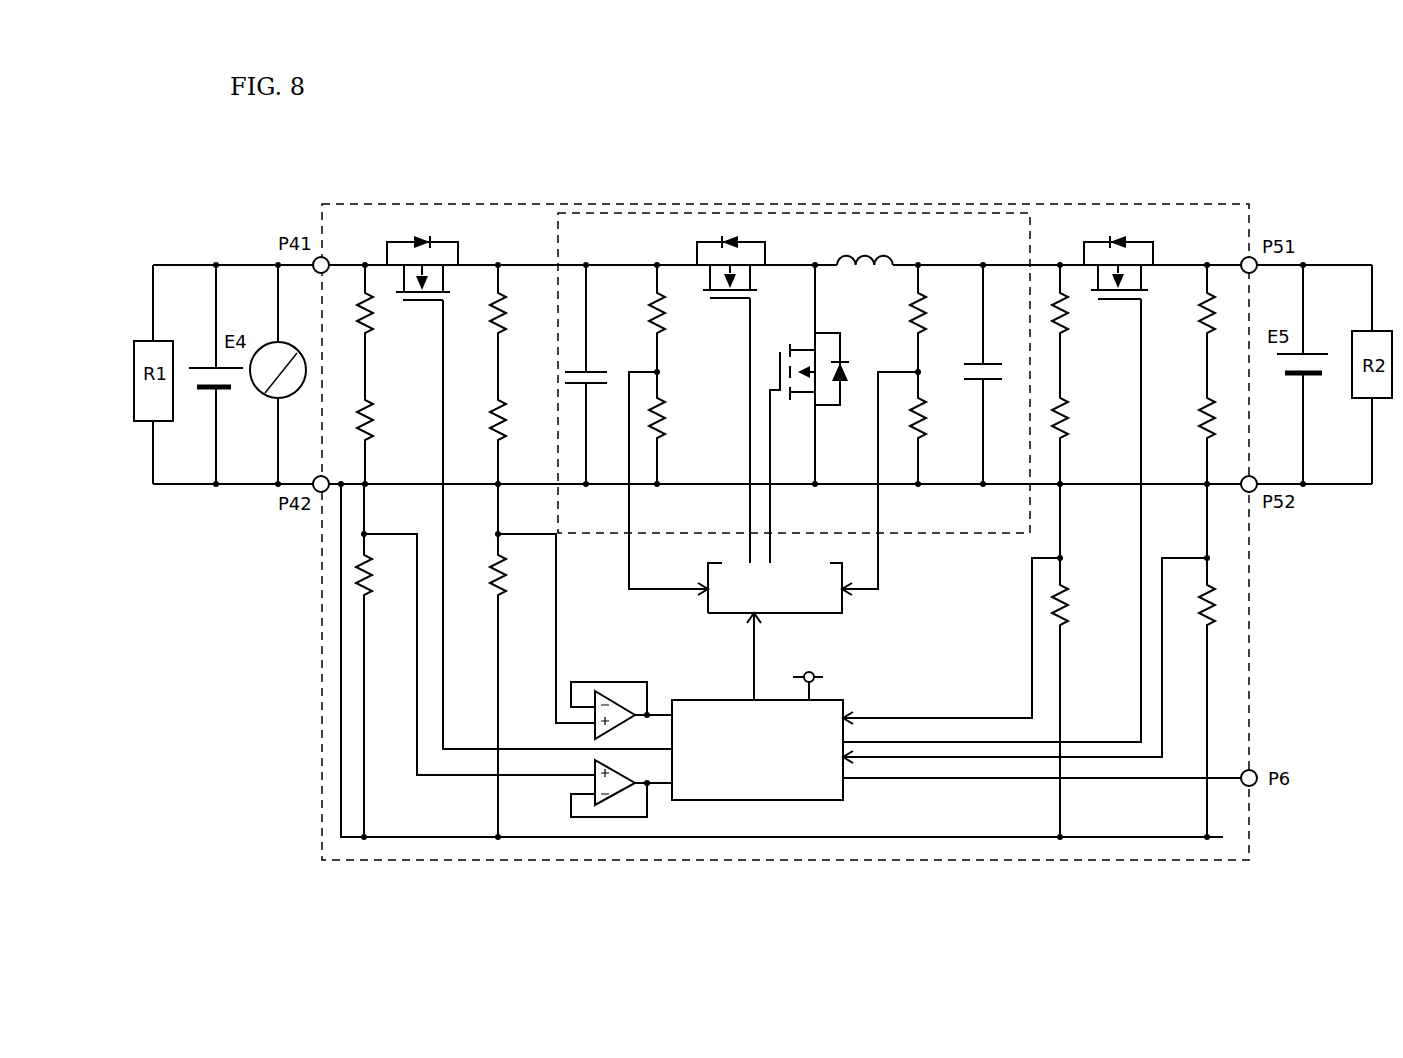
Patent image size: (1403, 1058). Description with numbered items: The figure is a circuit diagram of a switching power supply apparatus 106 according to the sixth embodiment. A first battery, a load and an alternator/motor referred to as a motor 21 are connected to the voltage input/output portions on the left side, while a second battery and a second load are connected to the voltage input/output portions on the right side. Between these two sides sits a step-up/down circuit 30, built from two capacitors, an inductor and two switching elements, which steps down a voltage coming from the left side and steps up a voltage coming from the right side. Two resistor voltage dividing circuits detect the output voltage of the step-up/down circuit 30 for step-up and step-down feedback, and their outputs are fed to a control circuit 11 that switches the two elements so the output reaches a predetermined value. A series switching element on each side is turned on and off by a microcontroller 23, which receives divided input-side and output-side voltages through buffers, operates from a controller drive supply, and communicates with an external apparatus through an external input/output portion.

The switching power supply apparatus 106 is at (342, 203).
The step-up/down circuit 30 is at (620, 207).
The motor 21 is at (280, 374).
The control circuit 11 is at (720, 561).
The microcontroller 23 is at (732, 699).